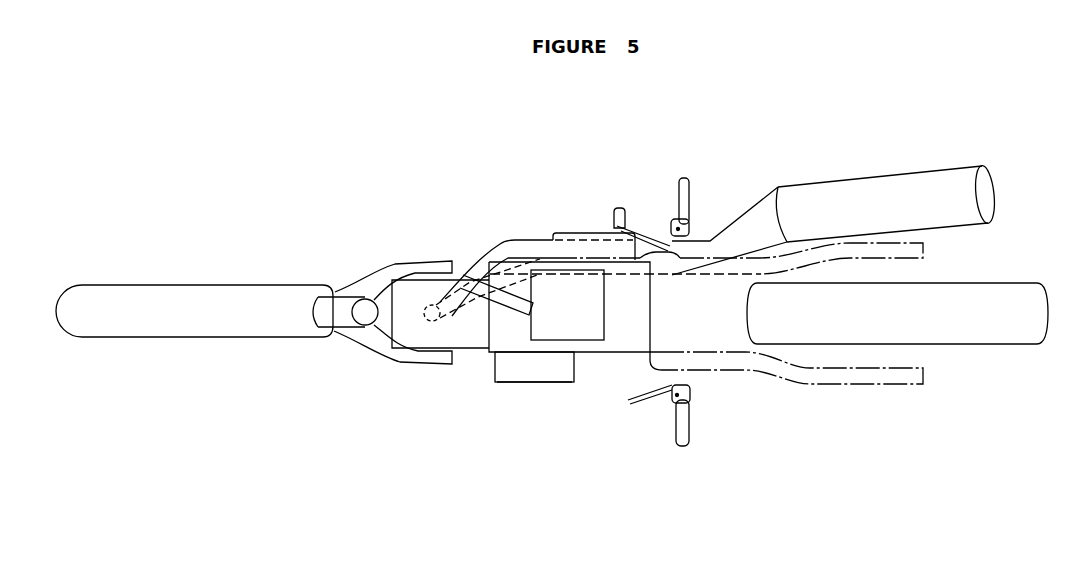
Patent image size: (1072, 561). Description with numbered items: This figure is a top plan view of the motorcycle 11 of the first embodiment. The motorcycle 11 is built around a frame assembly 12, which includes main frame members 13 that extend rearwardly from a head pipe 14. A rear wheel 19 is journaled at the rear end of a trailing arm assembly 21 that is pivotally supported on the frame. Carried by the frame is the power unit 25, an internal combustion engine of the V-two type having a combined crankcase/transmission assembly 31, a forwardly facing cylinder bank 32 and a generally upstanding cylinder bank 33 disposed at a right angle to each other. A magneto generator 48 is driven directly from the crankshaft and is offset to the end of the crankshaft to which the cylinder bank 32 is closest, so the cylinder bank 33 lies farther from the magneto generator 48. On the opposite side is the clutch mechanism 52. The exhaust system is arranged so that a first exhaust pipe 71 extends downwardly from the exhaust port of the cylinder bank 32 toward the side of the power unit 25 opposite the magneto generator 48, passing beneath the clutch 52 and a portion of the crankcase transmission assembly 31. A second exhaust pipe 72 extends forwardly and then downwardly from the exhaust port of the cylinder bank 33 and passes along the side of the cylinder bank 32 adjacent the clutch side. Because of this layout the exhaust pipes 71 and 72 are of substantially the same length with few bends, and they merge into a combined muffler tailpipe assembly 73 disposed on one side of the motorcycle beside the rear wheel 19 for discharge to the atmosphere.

The motorcycle 11 is at (701, 196).
The frame assembly 12 is at (357, 355).
The main frame members 13 is at (385, 272).
The head pipe 14 is at (335, 290).
The rear wheel 19 is at (990, 344).
The trailing arm assembly 21 is at (855, 386).
The power unit 25 is at (527, 390).
The crankcase/transmission assembly 31 is at (610, 352).
The forwardly facing cylinder bank 32 is at (463, 350).
The upstanding cylinder bank 33 is at (560, 340).
The magneto generator 48 is at (510, 383).
The clutch mechanism 52 is at (583, 233).
The first exhaust pipe 71 is at (434, 304).
The exhaust pipe 72 is at (518, 240).
The combined muffler tailpipe assembly 73 is at (907, 174).